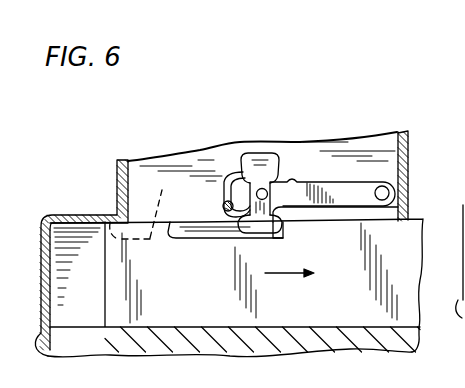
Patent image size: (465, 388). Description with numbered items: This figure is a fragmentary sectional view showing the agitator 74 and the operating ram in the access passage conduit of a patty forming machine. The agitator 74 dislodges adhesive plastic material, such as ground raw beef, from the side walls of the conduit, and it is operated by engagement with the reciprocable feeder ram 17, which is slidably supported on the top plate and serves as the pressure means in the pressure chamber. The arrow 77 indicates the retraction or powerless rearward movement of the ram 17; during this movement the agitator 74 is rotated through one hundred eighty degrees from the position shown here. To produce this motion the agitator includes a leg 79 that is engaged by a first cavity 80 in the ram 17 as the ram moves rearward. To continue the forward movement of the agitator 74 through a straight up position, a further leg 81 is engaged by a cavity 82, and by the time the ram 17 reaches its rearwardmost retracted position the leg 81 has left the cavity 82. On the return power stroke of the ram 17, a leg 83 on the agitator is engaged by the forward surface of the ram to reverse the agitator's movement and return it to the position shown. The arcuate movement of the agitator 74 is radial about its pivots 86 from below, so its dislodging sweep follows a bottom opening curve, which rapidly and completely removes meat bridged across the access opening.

The feeder ram 17 is at (164, 287).
The agitator 74 is at (337, 182).
The arrow indicating rearward movement 77 is at (281, 277).
The leg 79 is at (273, 239).
The first cavity 80 is at (210, 239).
The leg 81 is at (233, 172).
The cavity 82 is at (150, 211).
The leg 83 is at (259, 152).
The pivots 86 is at (266, 189).